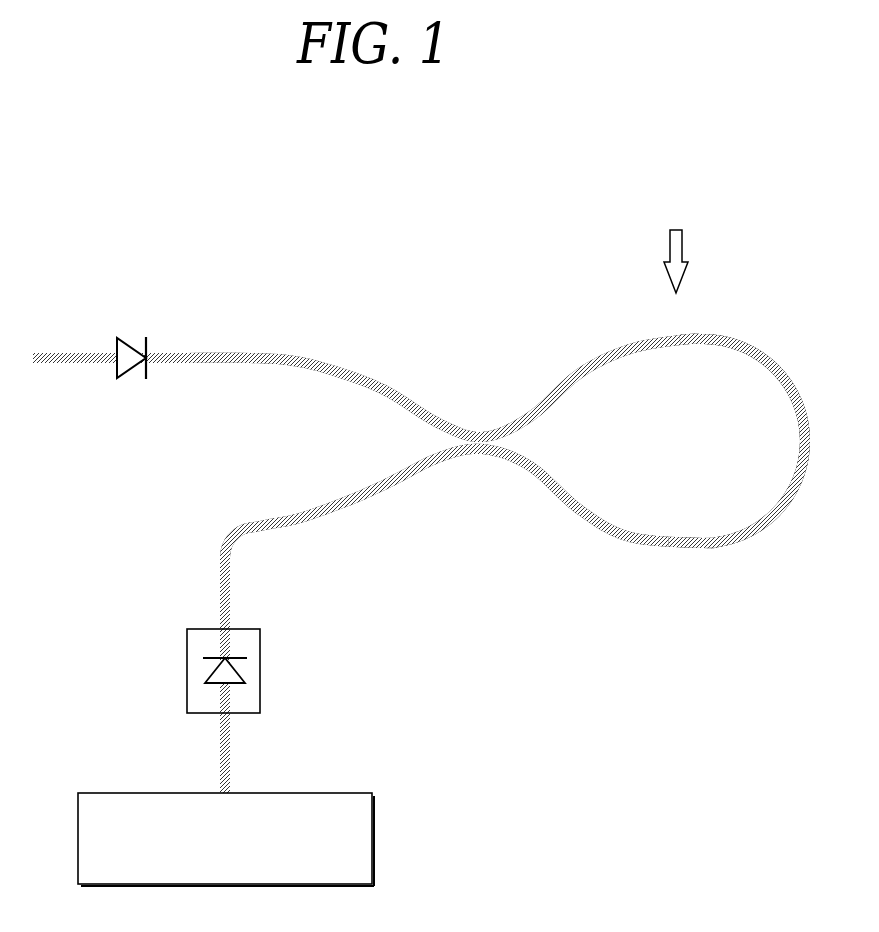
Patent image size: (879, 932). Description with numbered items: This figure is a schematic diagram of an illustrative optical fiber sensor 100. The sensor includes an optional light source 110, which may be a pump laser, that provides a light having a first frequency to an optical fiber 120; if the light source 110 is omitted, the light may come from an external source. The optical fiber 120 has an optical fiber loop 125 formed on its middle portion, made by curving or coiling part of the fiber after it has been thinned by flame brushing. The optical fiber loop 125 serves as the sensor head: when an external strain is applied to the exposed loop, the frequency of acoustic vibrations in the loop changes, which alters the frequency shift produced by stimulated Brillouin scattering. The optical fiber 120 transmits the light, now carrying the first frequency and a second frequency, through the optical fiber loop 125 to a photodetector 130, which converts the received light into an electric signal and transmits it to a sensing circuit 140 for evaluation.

The optical fiber sensor 100 is at (332, 208).
The light source 110 is at (128, 337).
The optical fiber 120 is at (303, 358).
The optical fiber loop 125 is at (692, 336).
The photodetector 130 is at (262, 670).
The sensing circuit 140 is at (372, 835).